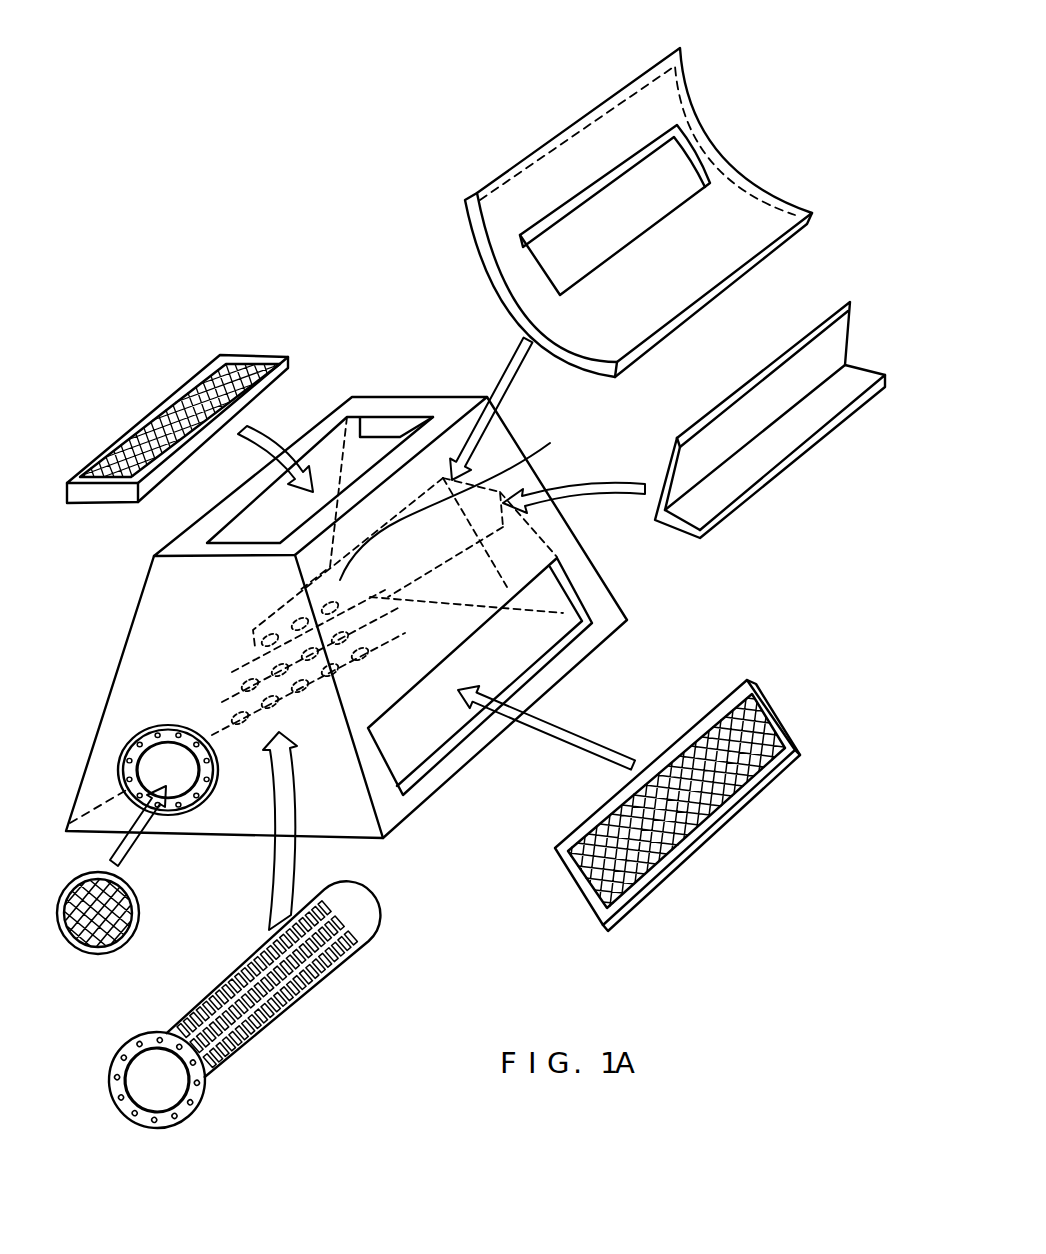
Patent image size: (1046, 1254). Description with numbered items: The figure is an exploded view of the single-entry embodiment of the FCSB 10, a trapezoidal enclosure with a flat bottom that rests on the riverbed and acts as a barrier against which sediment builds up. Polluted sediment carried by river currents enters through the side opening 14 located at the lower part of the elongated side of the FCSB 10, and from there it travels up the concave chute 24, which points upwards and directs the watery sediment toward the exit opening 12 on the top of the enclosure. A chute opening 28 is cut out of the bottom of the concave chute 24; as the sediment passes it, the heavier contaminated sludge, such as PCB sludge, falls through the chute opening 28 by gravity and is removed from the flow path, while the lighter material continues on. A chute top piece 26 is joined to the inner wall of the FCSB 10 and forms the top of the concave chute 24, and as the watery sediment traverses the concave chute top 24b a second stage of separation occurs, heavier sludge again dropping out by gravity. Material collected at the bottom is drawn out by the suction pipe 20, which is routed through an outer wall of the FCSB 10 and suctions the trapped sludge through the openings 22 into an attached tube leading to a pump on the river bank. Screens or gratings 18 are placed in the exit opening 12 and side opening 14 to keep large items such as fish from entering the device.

The FCSB 10 is at (357, 318).
The exit opening 12 is at (397, 413).
The side opening 14 is at (573, 576).
The screens or gratings 18 is at (178, 408).
The suction pipe 20 is at (238, 760).
The openings 22 is at (502, 488).
The concave chute 24 is at (782, 242).
The concave chute top 24b is at (565, 123).
The chute top piece 26 is at (778, 478).
The chute opening 28 is at (660, 177).